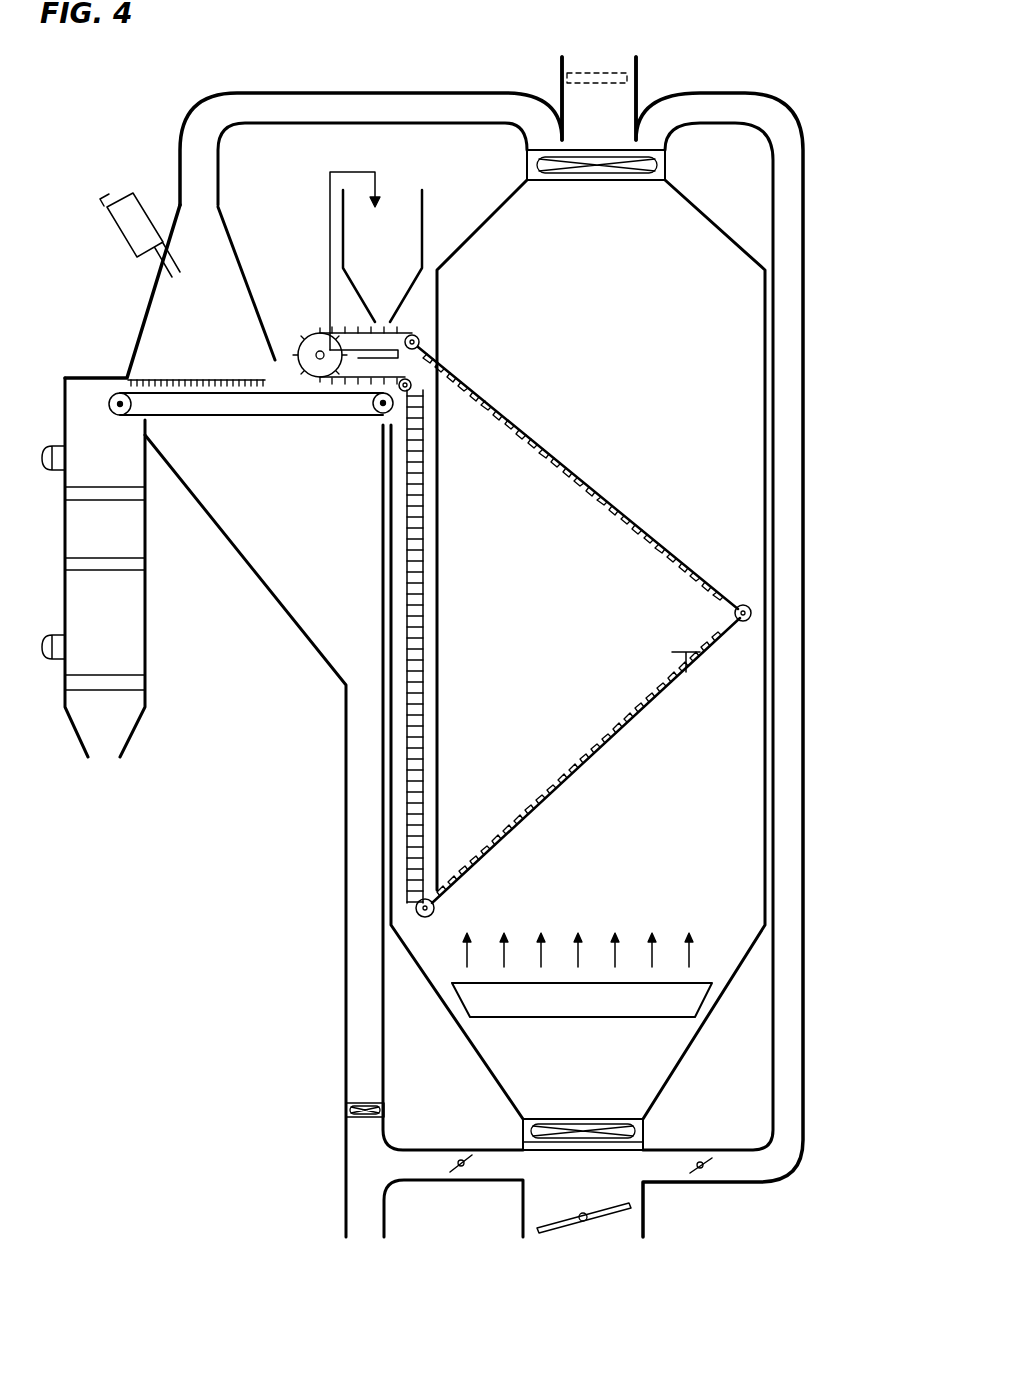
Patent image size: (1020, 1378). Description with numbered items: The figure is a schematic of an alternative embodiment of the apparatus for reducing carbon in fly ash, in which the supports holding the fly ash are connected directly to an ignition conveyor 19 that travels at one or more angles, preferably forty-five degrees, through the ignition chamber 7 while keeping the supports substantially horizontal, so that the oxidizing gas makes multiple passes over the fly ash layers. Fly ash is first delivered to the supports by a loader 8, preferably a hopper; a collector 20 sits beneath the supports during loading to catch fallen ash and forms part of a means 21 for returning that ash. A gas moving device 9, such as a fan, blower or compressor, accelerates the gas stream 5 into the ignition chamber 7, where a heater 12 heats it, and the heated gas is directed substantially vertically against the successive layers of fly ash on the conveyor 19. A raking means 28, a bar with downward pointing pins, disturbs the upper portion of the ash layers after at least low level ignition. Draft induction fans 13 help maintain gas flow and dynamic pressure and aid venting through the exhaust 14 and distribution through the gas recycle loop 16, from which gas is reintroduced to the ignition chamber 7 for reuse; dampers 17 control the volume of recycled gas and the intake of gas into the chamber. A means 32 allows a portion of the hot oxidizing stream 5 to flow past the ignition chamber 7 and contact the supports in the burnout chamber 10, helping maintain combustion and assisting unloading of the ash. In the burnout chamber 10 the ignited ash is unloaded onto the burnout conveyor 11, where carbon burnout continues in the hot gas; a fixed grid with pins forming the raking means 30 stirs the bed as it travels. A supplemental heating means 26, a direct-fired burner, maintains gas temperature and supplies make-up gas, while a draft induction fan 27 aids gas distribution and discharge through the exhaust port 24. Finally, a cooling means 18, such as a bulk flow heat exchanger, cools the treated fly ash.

The gas stream 5 is at (697, 965).
The ignition chamber 7 is at (727, 232).
The loader 8 is at (427, 207).
The gas moving device 9 is at (540, 1132).
The burnout chamber 10 is at (148, 303).
The burnout conveyor 11 is at (232, 415).
The heater 12 is at (695, 998).
The fans 13 is at (652, 165).
The exhaust 14 is at (578, 80).
The gas recycle loop 16 is at (806, 307).
The damper 17 is at (465, 1172).
The means for cooling the fly ash 18 is at (85, 530).
The ignition conveyor 19 is at (510, 410).
The collector 20 is at (383, 358).
The means for returning ash 21 is at (330, 222).
The exhaust port 24 is at (353, 1218).
The supplemental heating means 26 is at (130, 232).
The draft induction fan 27 is at (346, 1106).
The raking means 28 is at (680, 652).
The means for raking or stirring ignited fly ash 30 is at (198, 378).
The means for allowing gas to bypass the ignition chamber 32 is at (440, 640).